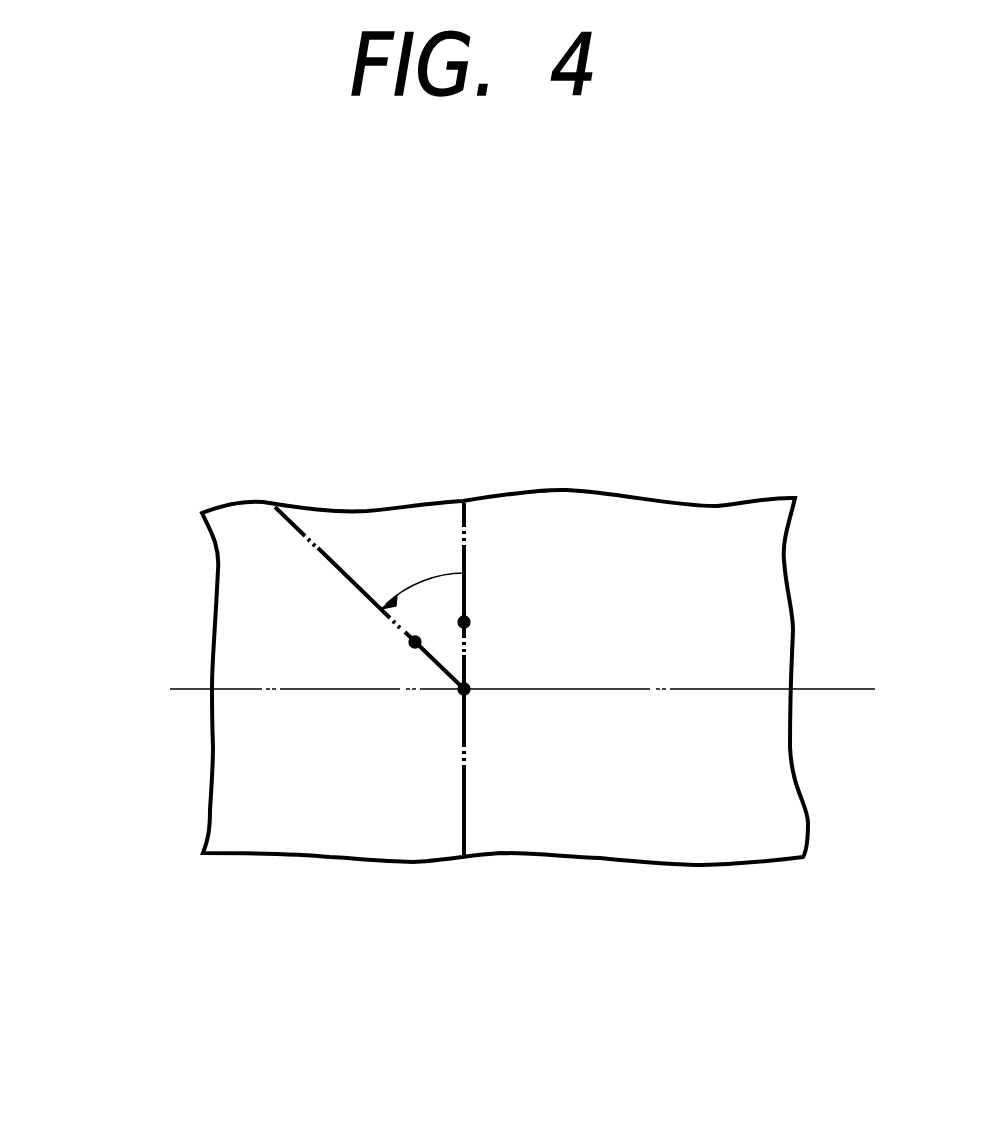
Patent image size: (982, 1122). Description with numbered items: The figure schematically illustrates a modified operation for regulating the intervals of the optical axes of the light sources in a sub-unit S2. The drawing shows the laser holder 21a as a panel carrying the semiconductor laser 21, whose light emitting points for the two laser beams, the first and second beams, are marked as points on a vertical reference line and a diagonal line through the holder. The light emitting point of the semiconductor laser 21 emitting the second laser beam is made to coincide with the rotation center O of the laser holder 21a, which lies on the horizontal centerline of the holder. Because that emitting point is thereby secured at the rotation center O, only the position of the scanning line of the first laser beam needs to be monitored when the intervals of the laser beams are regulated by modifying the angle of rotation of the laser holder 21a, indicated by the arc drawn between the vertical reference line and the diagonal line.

The semiconductor laser 21 is at (470, 620).
The laser holder 21a is at (232, 613).
The sub-unit S2 is at (307, 440).
The rotation center O is at (478, 698).